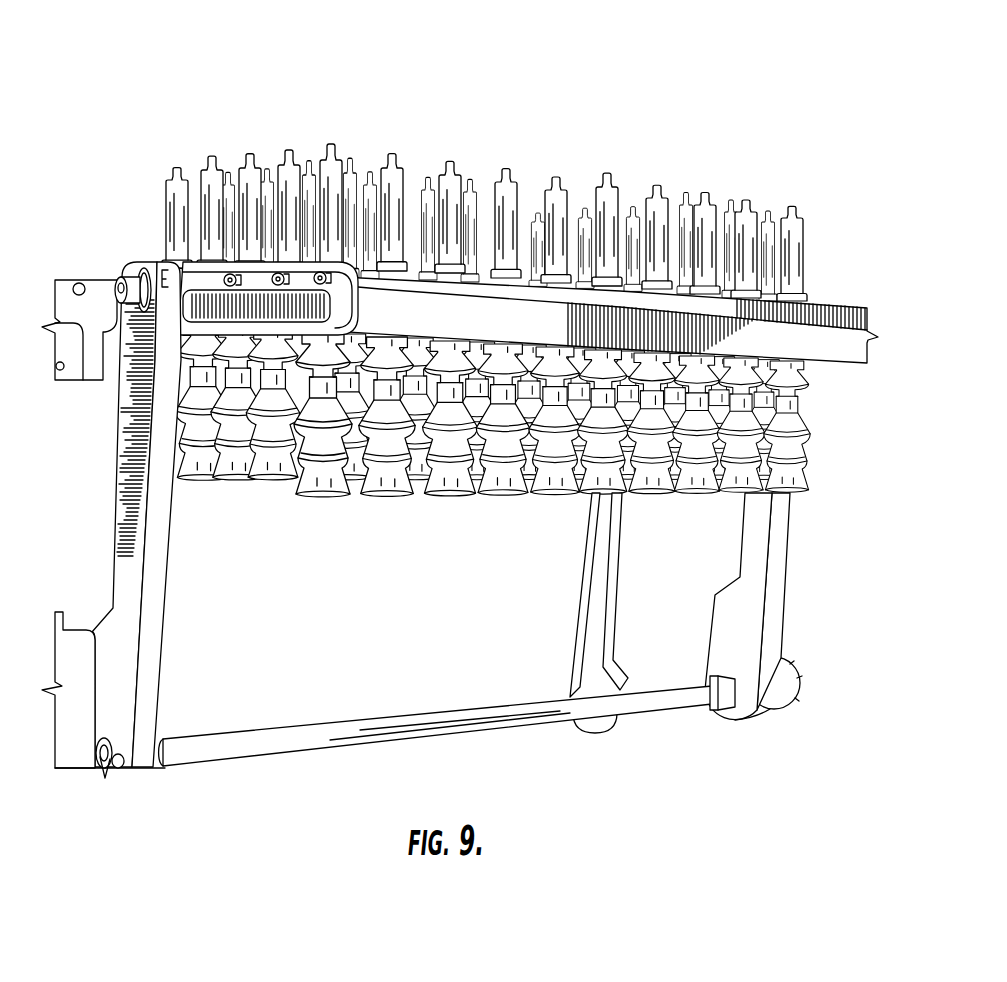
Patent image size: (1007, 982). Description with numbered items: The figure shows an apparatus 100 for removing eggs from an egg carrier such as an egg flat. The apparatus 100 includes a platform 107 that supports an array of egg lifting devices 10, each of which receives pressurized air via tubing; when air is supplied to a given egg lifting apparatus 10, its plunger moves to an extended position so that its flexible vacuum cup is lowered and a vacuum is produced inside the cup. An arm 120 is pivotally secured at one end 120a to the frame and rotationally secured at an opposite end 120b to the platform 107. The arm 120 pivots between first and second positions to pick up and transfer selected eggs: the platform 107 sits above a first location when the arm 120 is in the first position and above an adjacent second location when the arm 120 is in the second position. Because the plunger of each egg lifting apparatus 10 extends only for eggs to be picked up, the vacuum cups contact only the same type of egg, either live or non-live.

The apparatus 100 is at (520, 256).
The egg lifting apparatus 10 is at (665, 203).
The platform 107 is at (178, 273).
The arm 120 is at (150, 665).
The one end of the arm 120a is at (130, 763).
The opposite end of the arm 120b is at (203, 283).